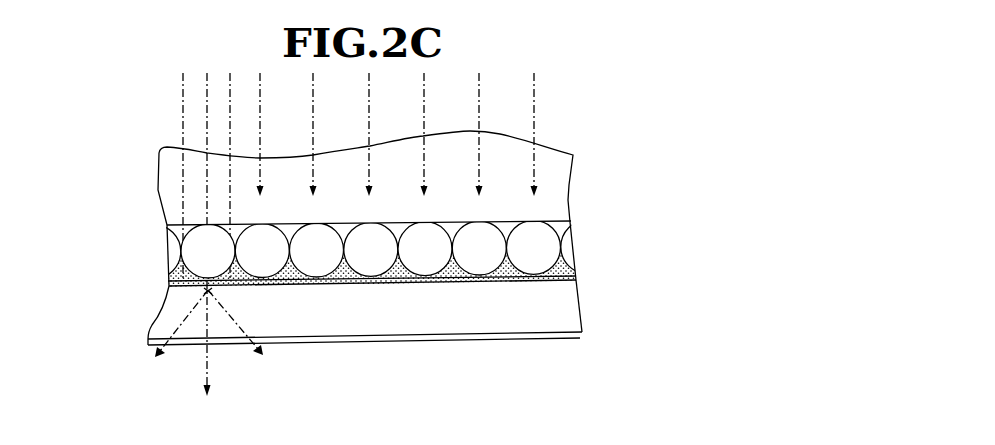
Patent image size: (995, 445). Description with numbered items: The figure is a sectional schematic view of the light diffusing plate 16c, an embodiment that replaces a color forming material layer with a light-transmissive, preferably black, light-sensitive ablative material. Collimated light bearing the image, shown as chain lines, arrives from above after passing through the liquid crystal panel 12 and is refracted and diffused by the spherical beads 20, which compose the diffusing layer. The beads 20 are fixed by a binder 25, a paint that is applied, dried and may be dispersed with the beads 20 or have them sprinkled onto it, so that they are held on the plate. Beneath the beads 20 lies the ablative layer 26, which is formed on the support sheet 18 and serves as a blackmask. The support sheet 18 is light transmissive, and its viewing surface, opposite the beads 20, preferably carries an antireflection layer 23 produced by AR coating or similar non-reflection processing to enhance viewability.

The light diffusing plate 16c is at (636, 153).
The liquid crystal panel 12 is at (555, 187).
The beads 20 is at (565, 245).
The support sheet 18 is at (562, 308).
The antireflection layer 23 is at (548, 340).
The binder 25 is at (172, 271).
The ablative layer 26 is at (150, 328).